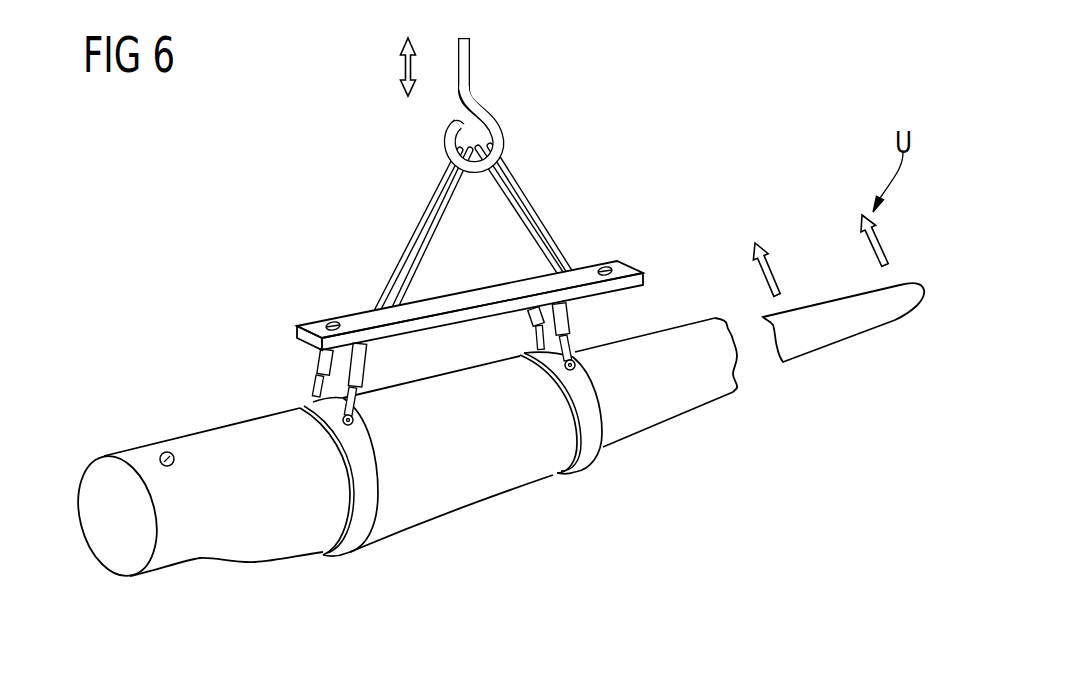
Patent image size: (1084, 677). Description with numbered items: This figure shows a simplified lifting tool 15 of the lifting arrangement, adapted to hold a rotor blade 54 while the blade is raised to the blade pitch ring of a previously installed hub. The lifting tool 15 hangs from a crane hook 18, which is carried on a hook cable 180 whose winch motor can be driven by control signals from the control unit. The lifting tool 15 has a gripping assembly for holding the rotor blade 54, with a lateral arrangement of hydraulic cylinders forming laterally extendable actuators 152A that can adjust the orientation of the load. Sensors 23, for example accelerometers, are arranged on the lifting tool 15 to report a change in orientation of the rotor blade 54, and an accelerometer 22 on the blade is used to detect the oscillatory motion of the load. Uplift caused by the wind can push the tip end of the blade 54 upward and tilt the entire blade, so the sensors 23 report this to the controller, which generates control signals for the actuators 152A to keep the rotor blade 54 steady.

The lifting tool 15 is at (595, 151).
The hook 18 is at (490, 123).
The hook cable 180 is at (472, 52).
The accelerometer 22 is at (167, 452).
The sensors 23 is at (328, 322).
The rotor blade 54 is at (233, 440).
The laterally extendable actuators 152A is at (560, 318).